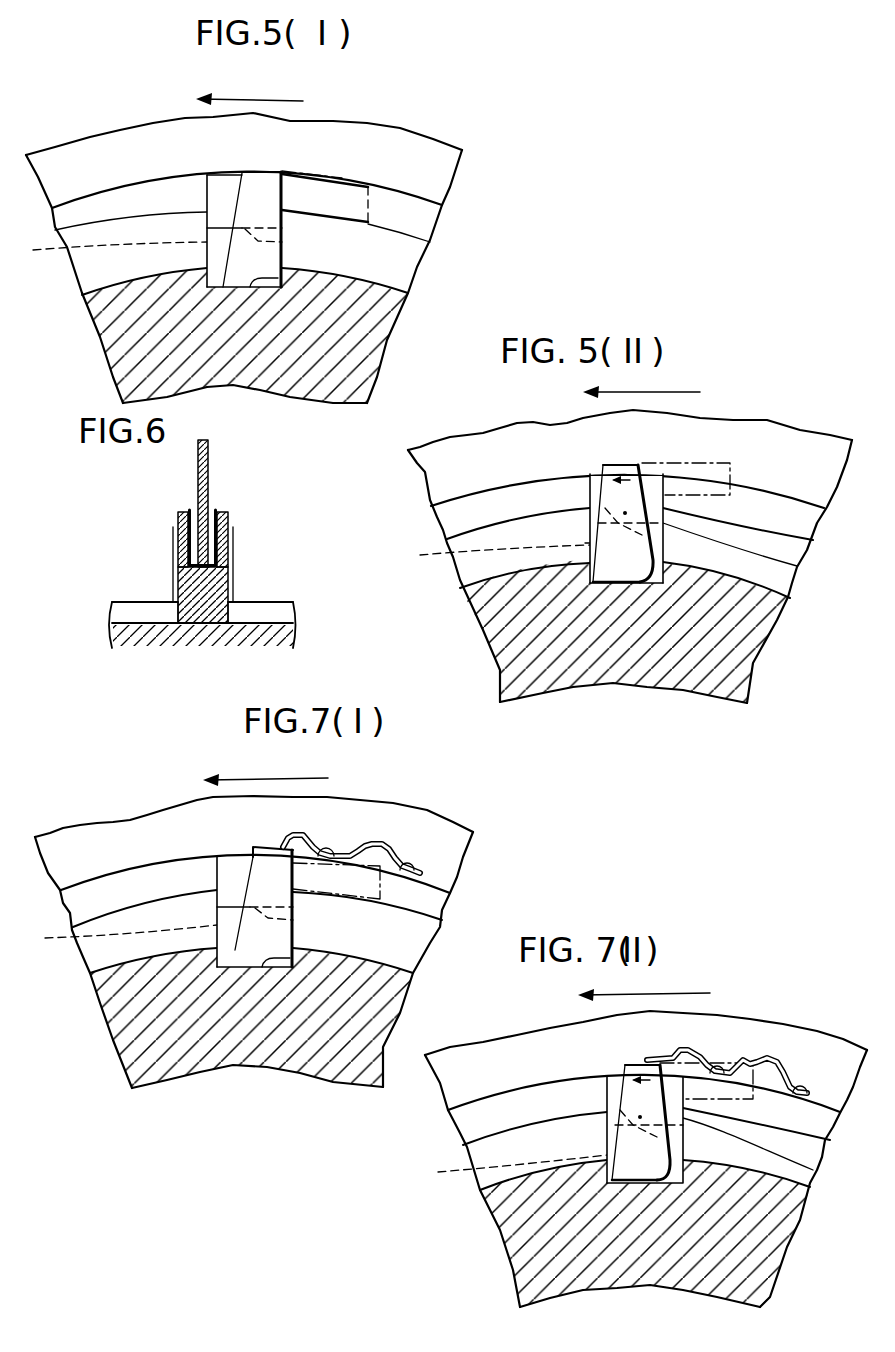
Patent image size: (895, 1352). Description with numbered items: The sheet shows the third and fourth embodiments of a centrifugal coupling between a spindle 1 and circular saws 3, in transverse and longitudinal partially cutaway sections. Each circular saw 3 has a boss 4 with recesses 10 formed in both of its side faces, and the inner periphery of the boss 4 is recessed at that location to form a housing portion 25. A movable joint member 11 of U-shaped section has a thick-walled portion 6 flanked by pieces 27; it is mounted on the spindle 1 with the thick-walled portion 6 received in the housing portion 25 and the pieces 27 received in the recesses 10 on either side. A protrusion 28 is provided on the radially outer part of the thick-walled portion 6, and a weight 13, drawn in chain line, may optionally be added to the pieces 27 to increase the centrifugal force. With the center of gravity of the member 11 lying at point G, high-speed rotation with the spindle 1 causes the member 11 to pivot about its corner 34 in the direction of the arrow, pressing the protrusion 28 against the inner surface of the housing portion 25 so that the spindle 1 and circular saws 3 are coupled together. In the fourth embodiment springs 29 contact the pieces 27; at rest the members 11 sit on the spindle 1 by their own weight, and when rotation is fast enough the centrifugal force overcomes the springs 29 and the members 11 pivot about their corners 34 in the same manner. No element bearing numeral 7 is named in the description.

In FIG. 5I, the spindle 1 is at (390, 380).
In FIG. 6, the spindle 1 is at (137, 643).
In FIG. 5II, the spindle 1 is at (750, 677).
In FIG. 7I, the spindle 1 is at (312, 1050).
In FIG. 7II, the spindle 1 is at (687, 1273).
In FIG. 5I, the circular saw 3 is at (108, 147).
In FIG. 6, the circular saw 3 is at (208, 475).
In FIG. 5II, the circular saw 3 is at (490, 445).
In FIG. 7I, the circular saw 3 is at (132, 823).
In FIG. 7II, the circular saw 3 is at (515, 1033).
In FIG. 5I, the boss 4 is at (403, 252).
In FIG. 6, the boss 4 is at (230, 577).
In FIG. 5II, the boss 4 is at (773, 537).
In FIG. 7I, the boss 4 is at (97, 918).
In FIG. 7II, the boss 4 is at (480, 1143).
In FIG. 5I, the thick-walled portion 6 is at (110, 251).
In FIG. 6, the thick-walled portion 6 is at (210, 610).
In FIG. 5II, the thick-walled portion 6 is at (504, 555).
In FIG. 7I, the thick-walled portion 6 is at (121, 935).
In FIG. 7II, the thick-walled portion 6 is at (513, 1171).
In FIG. 5I, the plate 7 is at (373, 282).
In FIG. 6, the plate 7 is at (280, 620).
In FIG. 5II, the plate 7 is at (777, 603).
In FIG. 7I, the plate 7 is at (300, 953).
In FIG. 7II, the plate 7 is at (797, 1180).
In FIG. 5I, the recess 10 is at (217, 197).
In FIG. 6, the recess 10 is at (190, 540).
In FIG. 7I, the recess 10 is at (233, 867).
In FIG. 5I, the movable joint member 11 is at (247, 283).
In FIG. 6, the movable joint member 11 is at (170, 627).
In FIG. 5II, the movable joint member 11 is at (633, 568).
In FIG. 5I, the weight 13 is at (334, 171).
In FIG. 5II, the weight 13 is at (730, 463).
In FIG. 7I, the weight 13 is at (380, 899).
In FIG. 7II, the weight 13 is at (753, 1099).
In FIG. 5I, the housing portion 25 is at (216, 268).
In FIG. 5II, the housing portion 25 is at (608, 583).
In FIG. 7I, the housing portion 25 is at (230, 953).
In FIG. 7II, the housing portion 25 is at (633, 1183).
In FIG. 5I, the piece 27 is at (265, 185).
In FIG. 6, the piece 27 is at (205, 498).
In FIG. 5II, the piece 27 is at (630, 495).
In FIG. 7I, the piece 27 is at (257, 883).
In FIG. 7II, the piece 27 is at (640, 1117).
In FIG. 5II, the protrusion 28 is at (600, 543).
In FIG. 7II, the protrusion 28 is at (613, 1133).
In FIG. 7I, the spring 29 is at (305, 837).
In FIG. 7II, the spring 29 is at (685, 1053).
In FIG. 5II, the corner 34 is at (600, 543).
In FIG. 7II, the corner 34 is at (612, 1183).
In FIG. 5II, the center of gravity G is at (797, 566).
In FIG. 7II, the center of gravity G is at (813, 1170).